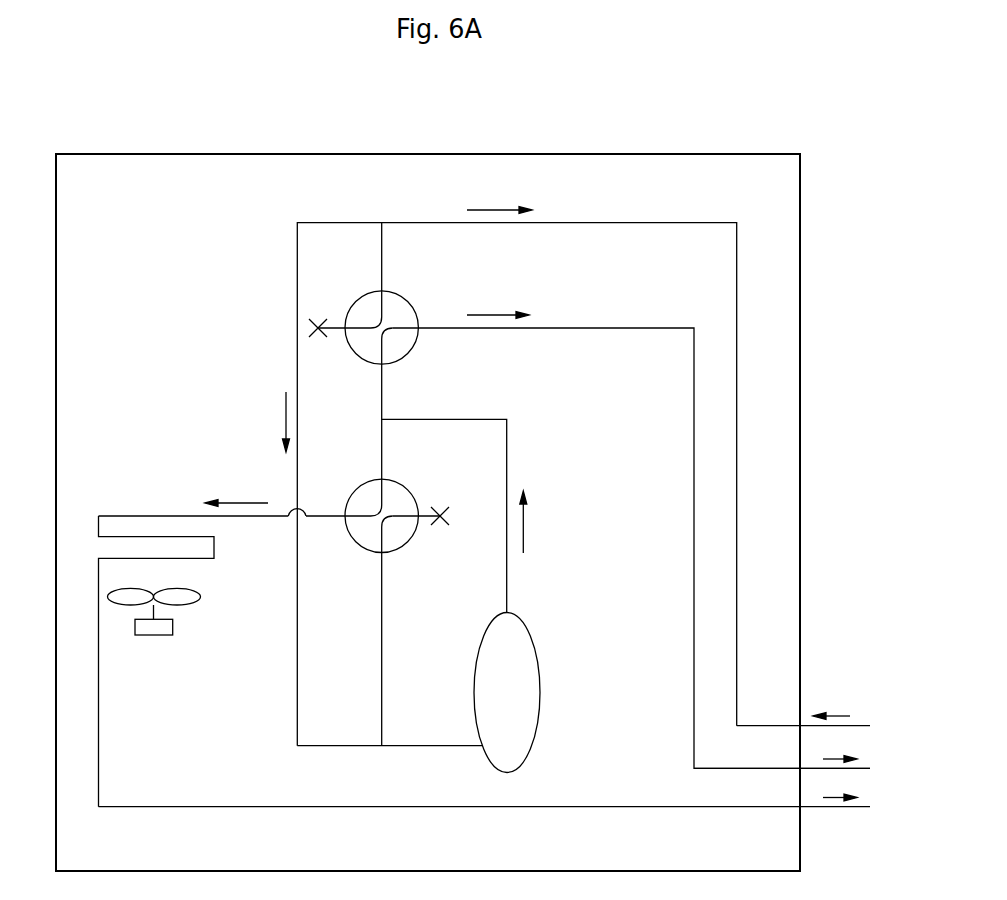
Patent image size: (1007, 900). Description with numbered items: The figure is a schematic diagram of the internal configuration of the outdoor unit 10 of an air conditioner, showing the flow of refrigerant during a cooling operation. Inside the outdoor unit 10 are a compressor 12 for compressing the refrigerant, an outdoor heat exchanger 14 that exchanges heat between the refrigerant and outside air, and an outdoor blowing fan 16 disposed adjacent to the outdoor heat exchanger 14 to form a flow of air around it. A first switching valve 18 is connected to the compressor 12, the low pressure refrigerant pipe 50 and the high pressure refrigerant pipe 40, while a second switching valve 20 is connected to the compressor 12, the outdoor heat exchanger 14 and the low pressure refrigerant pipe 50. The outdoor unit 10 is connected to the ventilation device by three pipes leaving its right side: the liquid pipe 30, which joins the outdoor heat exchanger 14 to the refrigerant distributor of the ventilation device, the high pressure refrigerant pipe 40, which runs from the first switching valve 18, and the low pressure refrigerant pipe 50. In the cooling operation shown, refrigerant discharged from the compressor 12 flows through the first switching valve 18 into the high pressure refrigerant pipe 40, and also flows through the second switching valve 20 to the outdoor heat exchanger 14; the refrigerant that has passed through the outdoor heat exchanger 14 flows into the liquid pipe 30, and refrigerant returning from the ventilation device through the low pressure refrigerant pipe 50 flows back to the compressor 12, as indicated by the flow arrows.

The outdoor unit 10 is at (662, 154).
The compressor 12 is at (540, 647).
The outdoor heat exchanger 14 is at (154, 536).
The outdoor blowing fan 16 is at (178, 596).
The first switching valve 18 is at (408, 298).
The second switching valve 20 is at (408, 486).
The liquid pipe 30 is at (860, 807).
The high pressure refrigerant pipe 40 is at (860, 768).
The low pressure refrigerant pipe 50 is at (860, 726).